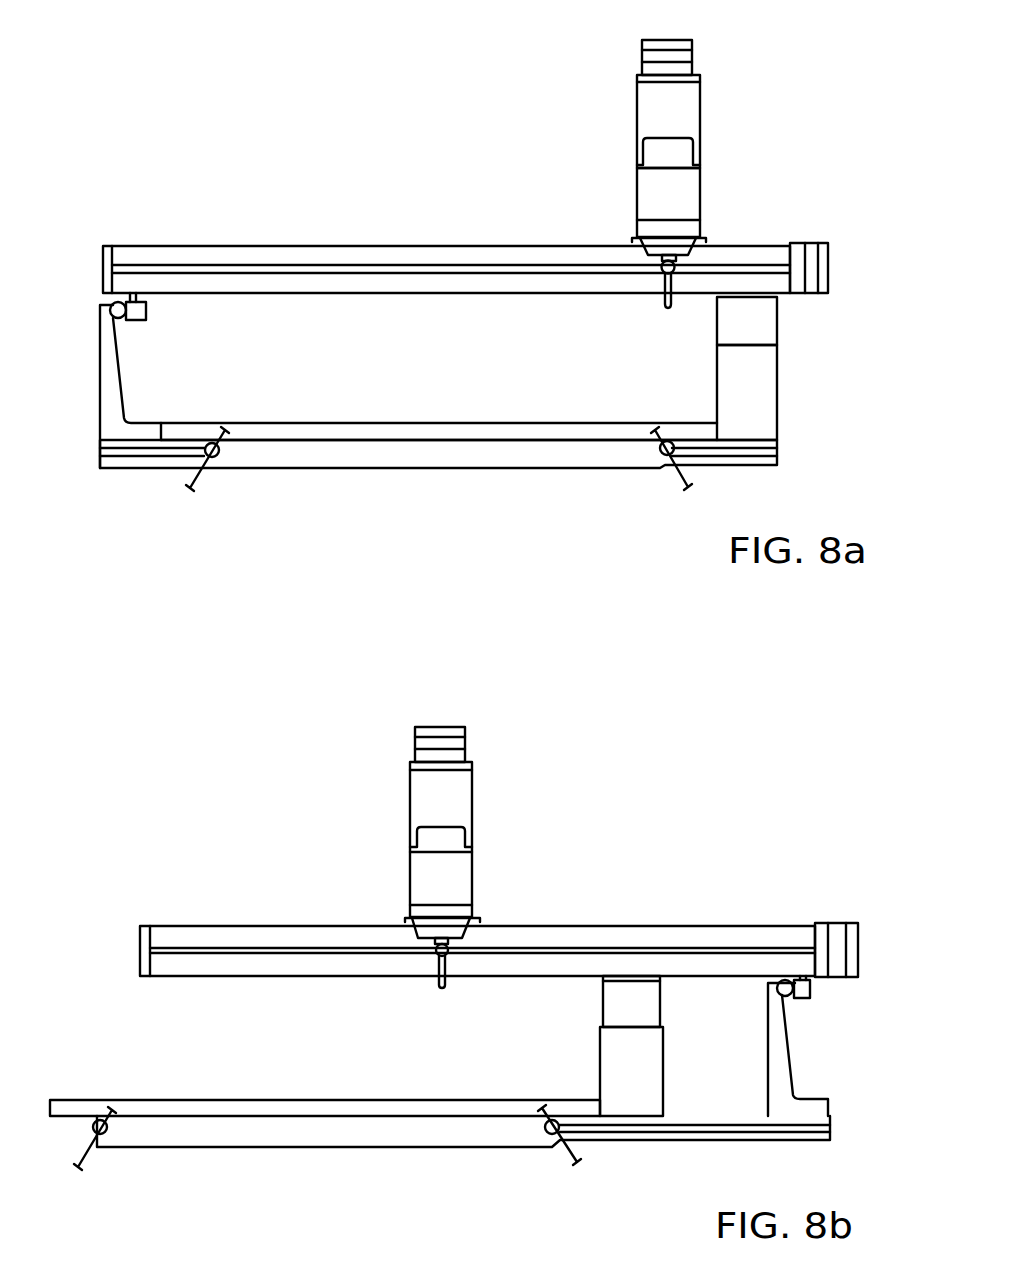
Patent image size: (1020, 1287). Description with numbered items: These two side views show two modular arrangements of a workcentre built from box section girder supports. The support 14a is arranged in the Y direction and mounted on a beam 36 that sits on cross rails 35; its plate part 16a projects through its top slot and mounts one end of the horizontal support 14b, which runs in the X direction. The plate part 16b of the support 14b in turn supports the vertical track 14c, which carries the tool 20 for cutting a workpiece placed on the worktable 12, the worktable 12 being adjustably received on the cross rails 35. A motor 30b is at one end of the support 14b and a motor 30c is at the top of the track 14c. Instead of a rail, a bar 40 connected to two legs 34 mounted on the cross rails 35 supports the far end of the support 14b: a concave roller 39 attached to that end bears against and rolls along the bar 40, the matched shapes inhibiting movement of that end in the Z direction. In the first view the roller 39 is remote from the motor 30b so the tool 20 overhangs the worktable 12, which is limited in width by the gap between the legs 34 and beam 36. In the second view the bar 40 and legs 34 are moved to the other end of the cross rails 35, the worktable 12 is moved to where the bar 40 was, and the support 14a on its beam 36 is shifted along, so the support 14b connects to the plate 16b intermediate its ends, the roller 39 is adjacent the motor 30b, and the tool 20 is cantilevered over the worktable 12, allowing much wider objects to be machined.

In FIG. 8a, the worktable 12 is at (437, 427).
In FIG. 8b, the worktable 12 is at (380, 1099).
In FIG. 8a, the support 14a is at (801, 376).
In FIG. 8b, the support 14a is at (675, 1046).
In FIG. 8a, the support 14b is at (497, 282).
In FIG. 8b, the support 14b is at (608, 938).
In FIG. 8a, the track 14c is at (670, 118).
In FIG. 8a, the plate part 16a is at (777, 297).
In FIG. 8a, the plate part 16b is at (703, 240).
In FIG. 8a, the tool 20 is at (653, 192).
In FIG. 8b, the tool 20 is at (458, 885).
In FIG. 8a, the motor 30b is at (832, 263).
In FIG. 8b, the motor 30b is at (853, 927).
In FIG. 8a, the motor 30c is at (692, 44).
In FIG. 8a, the legs 34 is at (165, 319).
In FIG. 8b, the legs 34 is at (838, 1046).
In FIG. 8a, the cross rails 35 is at (173, 460).
In FIG. 8b, the cross rails 35 is at (680, 1140).
In FIG. 8a, the beam 36 is at (755, 408).
In FIG. 8b, the beam 36 is at (663, 1062).
In FIG. 8a, the concave roller 39 is at (150, 312).
In FIG. 8b, the concave roller 39 is at (810, 988).
In FIG. 8a, the bar 40 is at (125, 317).
In FIG. 8b, the bar 40 is at (790, 996).